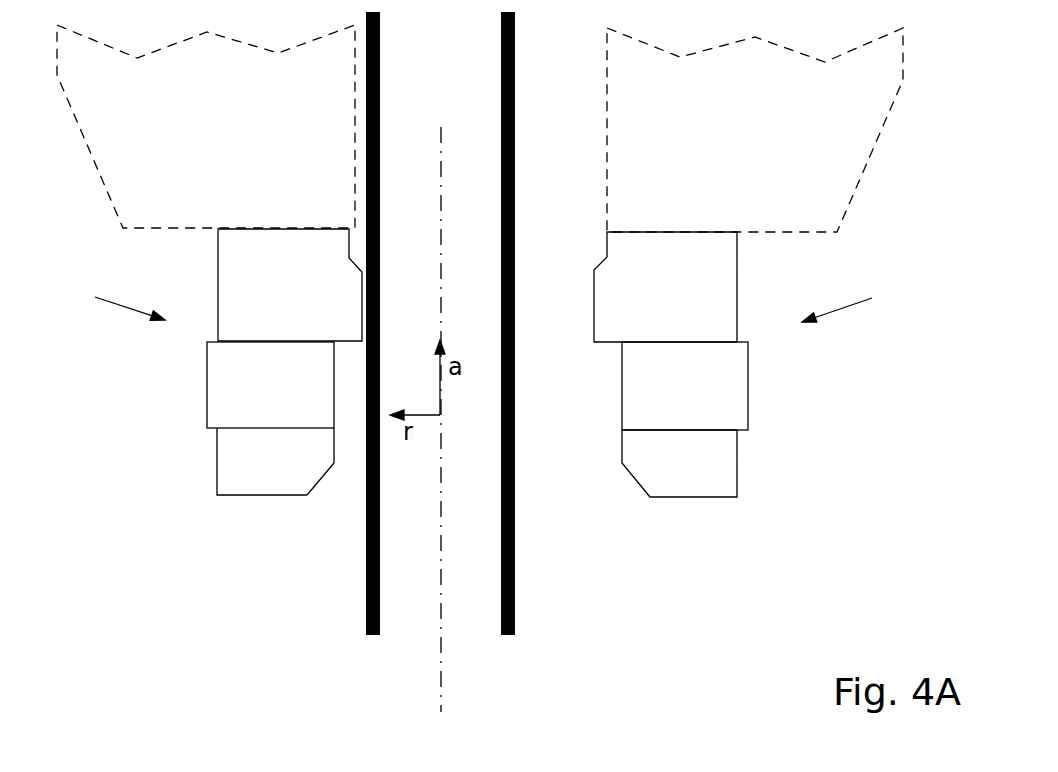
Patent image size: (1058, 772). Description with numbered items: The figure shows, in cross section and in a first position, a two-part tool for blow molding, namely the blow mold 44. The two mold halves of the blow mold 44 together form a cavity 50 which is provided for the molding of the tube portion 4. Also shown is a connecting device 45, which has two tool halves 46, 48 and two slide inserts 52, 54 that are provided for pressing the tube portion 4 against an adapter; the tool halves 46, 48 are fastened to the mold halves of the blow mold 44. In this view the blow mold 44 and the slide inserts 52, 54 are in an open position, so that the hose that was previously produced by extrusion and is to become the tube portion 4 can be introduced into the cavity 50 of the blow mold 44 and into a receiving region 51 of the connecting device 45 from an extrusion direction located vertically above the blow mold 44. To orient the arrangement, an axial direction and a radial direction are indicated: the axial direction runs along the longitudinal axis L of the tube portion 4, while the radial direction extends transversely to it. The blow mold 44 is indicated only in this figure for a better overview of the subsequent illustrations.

The tube portion 4 is at (513, 187).
The longitudinal axis L is at (460, 165).
The blow mold 44 is at (179, 147).
The connecting device 45 is at (479, 301).
The tool half 46 is at (240, 305).
The tool half 48 is at (718, 287).
The cavity 50 is at (578, 50).
The receiving region 51 is at (337, 481).
The slide insert 52 is at (245, 408).
The slide insert 54 is at (718, 397).